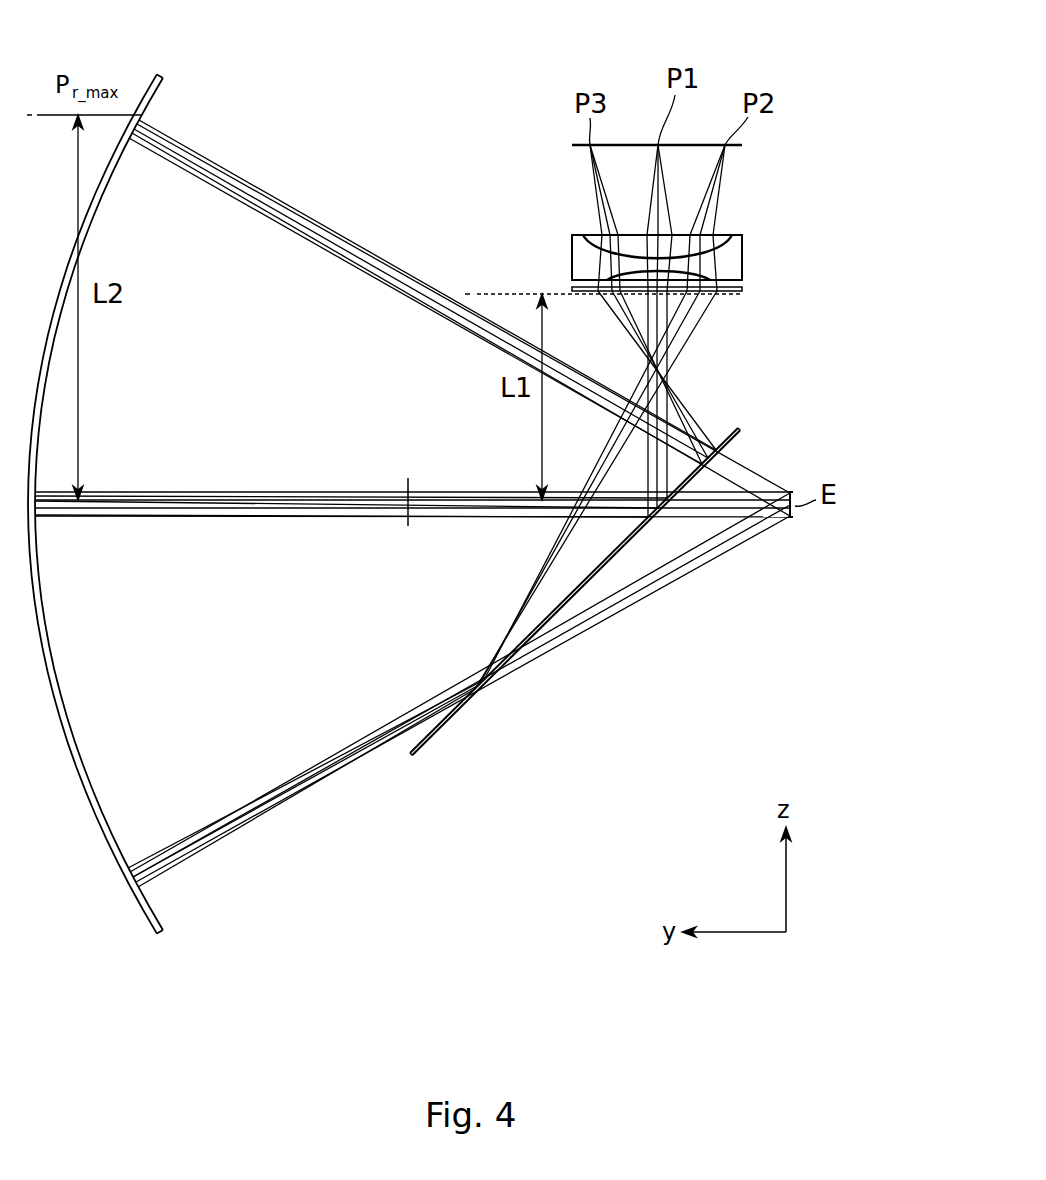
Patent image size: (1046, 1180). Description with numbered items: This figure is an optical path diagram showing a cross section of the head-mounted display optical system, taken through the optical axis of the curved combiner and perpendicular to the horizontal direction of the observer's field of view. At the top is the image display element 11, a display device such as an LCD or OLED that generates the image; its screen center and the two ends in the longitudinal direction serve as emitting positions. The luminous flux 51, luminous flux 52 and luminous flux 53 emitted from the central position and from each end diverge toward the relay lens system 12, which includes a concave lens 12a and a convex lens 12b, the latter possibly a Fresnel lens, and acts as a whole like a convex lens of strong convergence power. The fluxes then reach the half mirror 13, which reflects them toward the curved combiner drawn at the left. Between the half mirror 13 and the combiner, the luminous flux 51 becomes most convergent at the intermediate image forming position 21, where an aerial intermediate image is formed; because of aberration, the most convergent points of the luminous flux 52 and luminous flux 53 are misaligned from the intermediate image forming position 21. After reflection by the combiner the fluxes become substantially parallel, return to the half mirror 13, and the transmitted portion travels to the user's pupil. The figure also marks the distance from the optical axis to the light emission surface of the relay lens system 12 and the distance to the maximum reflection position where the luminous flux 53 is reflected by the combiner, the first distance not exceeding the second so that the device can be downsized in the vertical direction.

The image display element 11 is at (700, 143).
The relay lens system 12 is at (726, 267).
The concave lens 12a is at (743, 250).
The convex lens 12b is at (743, 289).
The half mirror 13 is at (733, 432).
The intermediate image forming position 21 is at (408, 478).
The luminous flux 51 is at (157, 497).
The luminous flux 52 is at (243, 815).
The luminous flux 53 is at (268, 203).